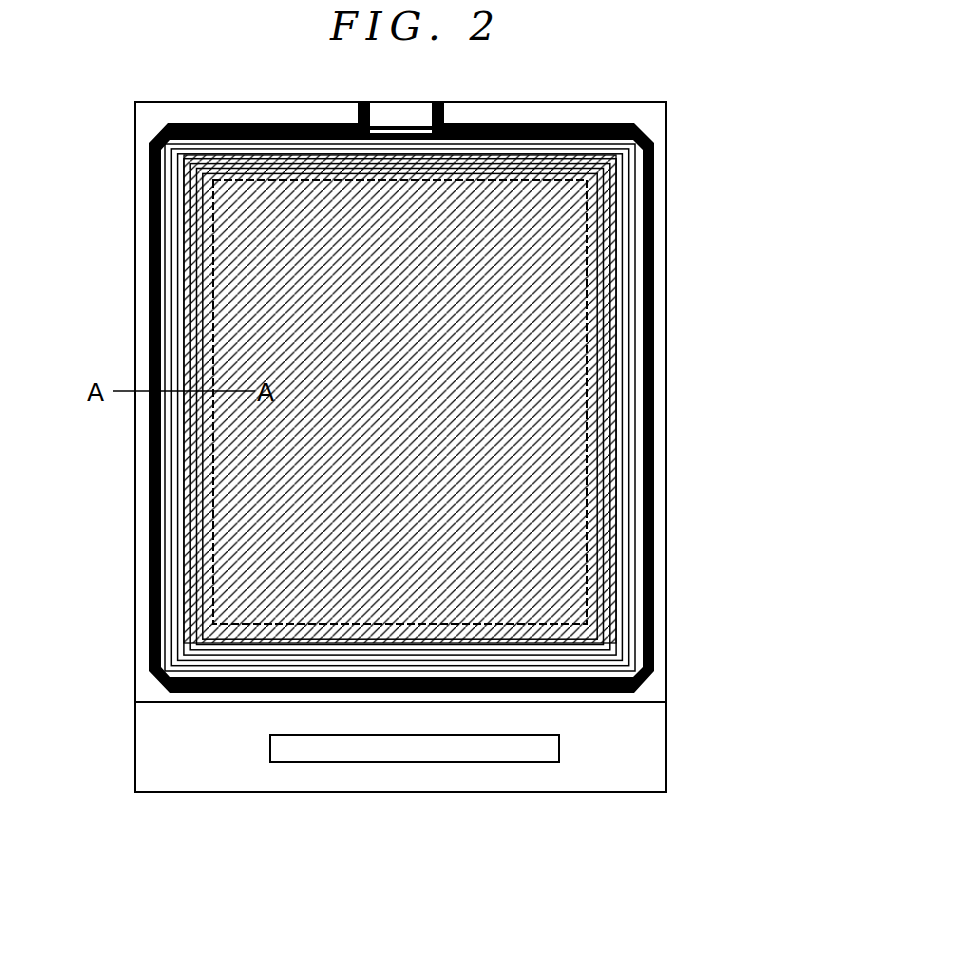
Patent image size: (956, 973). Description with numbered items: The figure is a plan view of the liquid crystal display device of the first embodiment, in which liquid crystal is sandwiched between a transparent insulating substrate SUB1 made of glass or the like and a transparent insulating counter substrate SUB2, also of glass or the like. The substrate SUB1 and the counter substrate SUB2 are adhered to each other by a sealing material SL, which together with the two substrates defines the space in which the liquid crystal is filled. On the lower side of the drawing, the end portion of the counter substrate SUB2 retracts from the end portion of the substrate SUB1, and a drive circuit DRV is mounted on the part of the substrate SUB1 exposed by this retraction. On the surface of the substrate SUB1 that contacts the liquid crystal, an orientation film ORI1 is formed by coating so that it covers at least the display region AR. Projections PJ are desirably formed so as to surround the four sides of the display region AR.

The sealing material SL is at (538, 122).
The projections PJ is at (633, 397).
The orientation film ORI1 is at (612, 332).
The display region AR is at (593, 295).
The counter substrate SUB2 is at (618, 702).
The substrate SUB1 is at (648, 792).
The drive circuit DRV is at (480, 762).